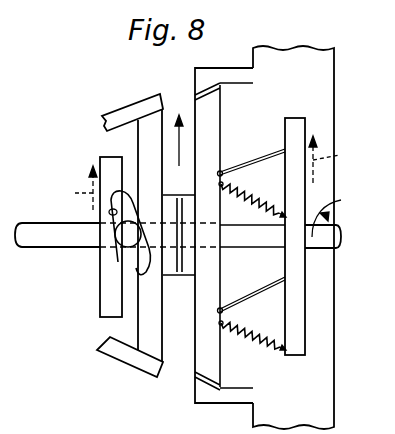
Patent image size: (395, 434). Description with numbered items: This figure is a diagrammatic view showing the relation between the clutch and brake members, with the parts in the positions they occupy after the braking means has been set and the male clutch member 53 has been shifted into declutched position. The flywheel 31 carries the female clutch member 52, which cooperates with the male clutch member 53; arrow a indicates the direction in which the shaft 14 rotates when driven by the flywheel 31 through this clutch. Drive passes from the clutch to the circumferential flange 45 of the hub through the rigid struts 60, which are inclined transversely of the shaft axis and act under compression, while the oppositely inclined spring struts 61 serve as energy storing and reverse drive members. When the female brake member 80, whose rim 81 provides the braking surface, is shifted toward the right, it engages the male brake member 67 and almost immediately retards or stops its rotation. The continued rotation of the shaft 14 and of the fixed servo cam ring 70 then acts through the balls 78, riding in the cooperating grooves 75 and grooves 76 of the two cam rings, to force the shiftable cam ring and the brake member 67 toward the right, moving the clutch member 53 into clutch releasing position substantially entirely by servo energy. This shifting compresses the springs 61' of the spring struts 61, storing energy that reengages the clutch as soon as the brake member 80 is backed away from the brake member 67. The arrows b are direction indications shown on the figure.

The shaft 14 is at (323, 247).
The flywheel 31 is at (330, 58).
The circumferential flange 45 is at (293, 347).
The female clutch member 52 is at (231, 73).
The male clutch member 53 is at (214, 111).
The rigid struts 60 is at (262, 160).
The spring struts 61 is at (253, 263).
The springs 61' is at (234, 280).
The male brake member 67 is at (153, 339).
The cam ring 70 is at (100, 300).
The grooves 75 is at (110, 217).
The grooves 76 is at (147, 259).
The balls 78 is at (126, 236).
The female brake member 80 is at (125, 107).
The rim 81 is at (152, 100).
The arrow a is at (332, 213).
The direction b is at (206, 173).